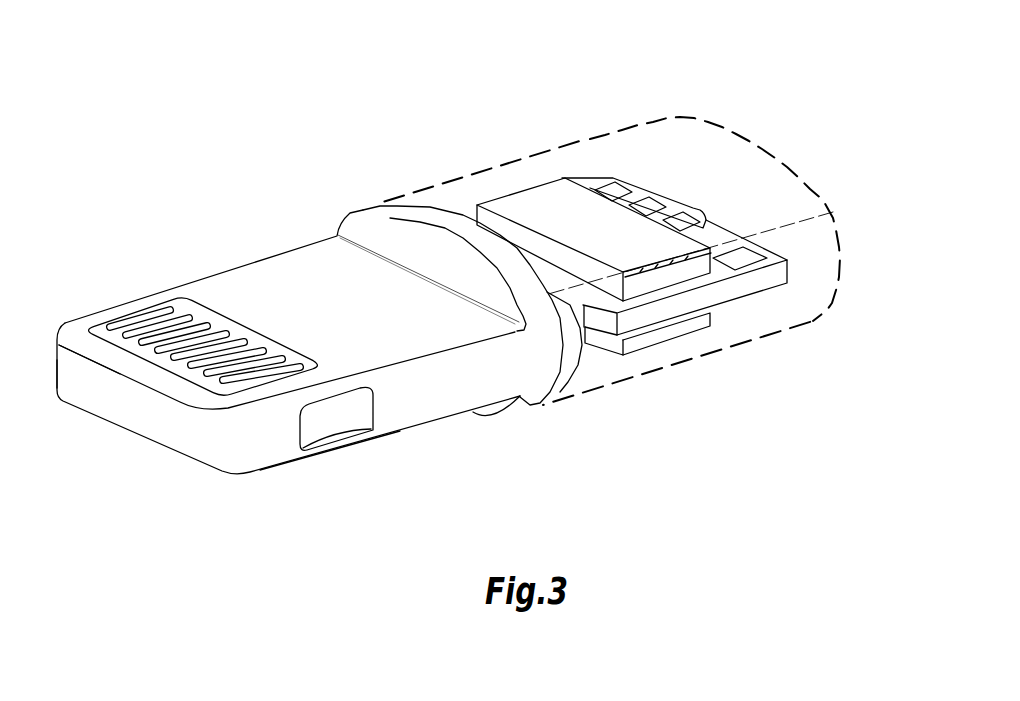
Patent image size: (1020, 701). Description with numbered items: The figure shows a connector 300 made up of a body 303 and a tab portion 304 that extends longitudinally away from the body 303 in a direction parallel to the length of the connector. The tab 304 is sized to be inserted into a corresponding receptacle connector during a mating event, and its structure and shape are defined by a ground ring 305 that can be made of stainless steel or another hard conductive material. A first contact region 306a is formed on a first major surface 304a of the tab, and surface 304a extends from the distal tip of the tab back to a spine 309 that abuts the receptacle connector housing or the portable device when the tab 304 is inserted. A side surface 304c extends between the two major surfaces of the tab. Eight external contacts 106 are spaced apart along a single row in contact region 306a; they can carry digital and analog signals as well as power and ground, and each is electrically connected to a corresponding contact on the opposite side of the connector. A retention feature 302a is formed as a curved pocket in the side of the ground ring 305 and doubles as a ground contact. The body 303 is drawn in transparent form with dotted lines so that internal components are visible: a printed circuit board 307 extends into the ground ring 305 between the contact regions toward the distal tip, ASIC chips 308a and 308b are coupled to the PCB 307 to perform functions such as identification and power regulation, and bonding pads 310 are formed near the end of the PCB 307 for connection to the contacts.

The connector 300 is at (273, 114).
The retention feature 302a is at (335, 423).
The body 303 is at (563, 172).
The tab portion 304 is at (323, 230).
The first major surface 304a is at (370, 316).
The first side surface 304c is at (458, 402).
The ground ring 305 is at (82, 398).
The first contact region 306a is at (152, 352).
The external contact 106 is at (231, 436).
The printed circuit board 307 is at (730, 292).
The ASIC chip 308a is at (514, 207).
The ASIC chip 308b is at (637, 340).
The spine 309 is at (393, 213).
The bonding pads 310 is at (753, 250).